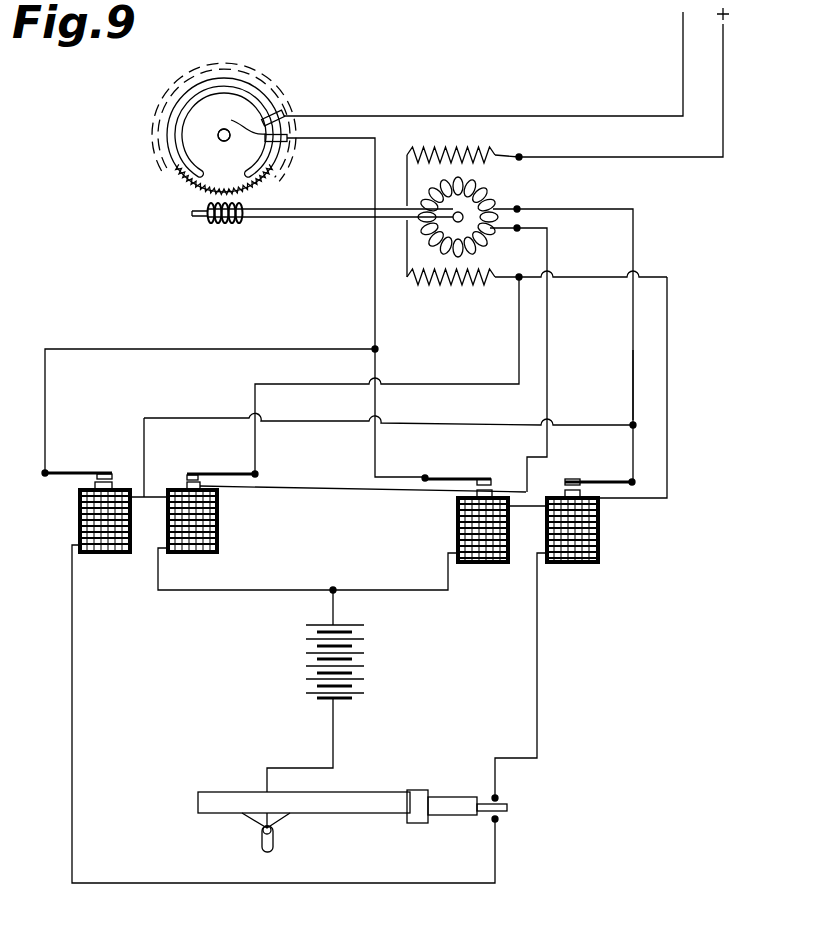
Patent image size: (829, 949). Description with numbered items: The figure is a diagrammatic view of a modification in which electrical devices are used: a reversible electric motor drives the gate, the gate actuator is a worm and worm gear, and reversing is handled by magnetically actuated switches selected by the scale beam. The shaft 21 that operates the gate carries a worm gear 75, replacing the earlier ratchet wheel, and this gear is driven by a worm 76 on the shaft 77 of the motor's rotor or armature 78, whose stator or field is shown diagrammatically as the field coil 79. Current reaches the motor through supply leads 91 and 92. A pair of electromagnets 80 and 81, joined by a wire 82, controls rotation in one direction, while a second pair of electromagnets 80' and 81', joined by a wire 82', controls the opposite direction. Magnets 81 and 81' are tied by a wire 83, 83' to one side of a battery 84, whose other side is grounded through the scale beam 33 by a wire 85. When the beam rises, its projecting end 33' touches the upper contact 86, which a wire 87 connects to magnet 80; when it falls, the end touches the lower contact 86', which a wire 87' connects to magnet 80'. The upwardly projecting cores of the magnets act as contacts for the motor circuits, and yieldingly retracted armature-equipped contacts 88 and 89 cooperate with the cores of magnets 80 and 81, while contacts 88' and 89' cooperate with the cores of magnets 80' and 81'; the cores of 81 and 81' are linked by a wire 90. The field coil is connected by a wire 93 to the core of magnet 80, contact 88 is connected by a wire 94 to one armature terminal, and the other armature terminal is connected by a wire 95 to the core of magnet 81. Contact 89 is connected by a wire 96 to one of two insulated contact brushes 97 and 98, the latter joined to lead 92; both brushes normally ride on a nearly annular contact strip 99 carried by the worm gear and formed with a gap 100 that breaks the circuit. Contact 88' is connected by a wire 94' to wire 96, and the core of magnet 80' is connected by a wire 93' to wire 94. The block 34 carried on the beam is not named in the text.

The shaft 21 is at (216, 130).
The scale beam 33 is at (467, 829).
The projecting end 33' is at (393, 822).
The insulating block 34 is at (415, 796).
The worm gear 75 is at (276, 78).
The worm 76 is at (228, 224).
The shaft 77 is at (298, 217).
The rotor or armature 78 is at (490, 197).
The stator or field 79 is at (470, 152).
The electromagnet 80 is at (596, 526).
The electromagnet 80' is at (110, 539).
The electromagnet 81 is at (488, 550).
The electromagnet 81' is at (217, 517).
The wire 82 is at (544, 475).
The wire 82' is at (153, 457).
The wire 83 is at (394, 570).
The wire 83' is at (245, 569).
The battery 84 is at (364, 660).
The wire 85 is at (333, 744).
The upper contact 86 is at (534, 781).
The lower contact 86' is at (533, 832).
The wire 87 is at (545, 675).
The wire 87' is at (283, 735).
The movable contact 88 is at (600, 461).
The movable contact 88' is at (77, 450).
The movable contact 89 is at (456, 459).
The movable contact 89' is at (222, 459).
The wire 90 is at (352, 492).
The supply lead 91 is at (723, 96).
The supply lead 92 is at (683, 70).
The wire 93 is at (602, 352).
The wire 93' is at (405, 356).
The wire 94 is at (610, 385).
The wire 94' is at (211, 409).
The wire 95 is at (548, 346).
The wire 96 is at (376, 326).
The contact brush 97 is at (244, 112).
The contact brush 98 is at (278, 112).
The contact strip 99 is at (242, 88).
The gap 100 is at (236, 147).